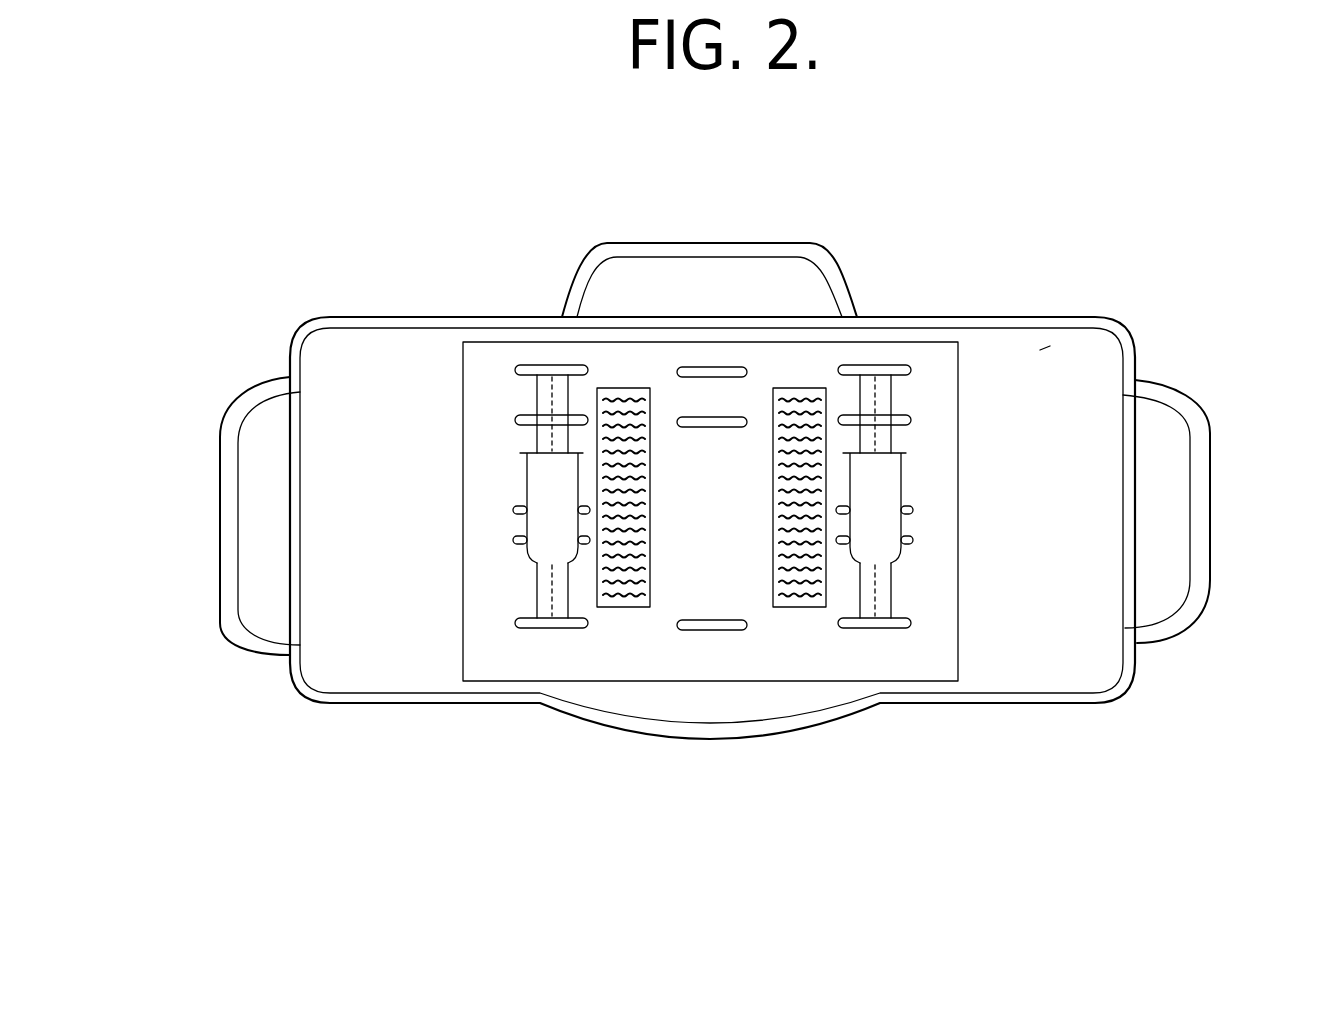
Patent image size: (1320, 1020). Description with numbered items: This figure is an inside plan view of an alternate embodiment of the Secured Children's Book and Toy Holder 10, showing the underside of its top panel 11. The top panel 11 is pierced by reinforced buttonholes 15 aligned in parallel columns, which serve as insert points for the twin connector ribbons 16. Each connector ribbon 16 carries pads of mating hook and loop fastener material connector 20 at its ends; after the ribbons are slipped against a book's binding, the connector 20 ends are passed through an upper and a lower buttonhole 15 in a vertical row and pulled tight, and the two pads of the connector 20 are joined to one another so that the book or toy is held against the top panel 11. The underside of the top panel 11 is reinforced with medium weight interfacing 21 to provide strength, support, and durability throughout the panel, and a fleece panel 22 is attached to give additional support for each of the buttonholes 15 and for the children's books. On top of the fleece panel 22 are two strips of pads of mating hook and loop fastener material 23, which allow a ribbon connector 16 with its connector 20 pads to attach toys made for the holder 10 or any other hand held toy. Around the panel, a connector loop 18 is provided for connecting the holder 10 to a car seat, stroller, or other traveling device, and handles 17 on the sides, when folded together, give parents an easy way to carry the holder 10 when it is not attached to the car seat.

The Secured Children's Book and Toy Holder 10 is at (418, 358).
The top panel 11 is at (730, 521).
The reinforced buttonholes 15 is at (517, 620).
The connector ribbons 16 is at (545, 405).
The handles 17 is at (228, 560).
The connector loop 18 is at (790, 243).
The pads of mating hook and loop fastener material connector 20 is at (540, 498).
The medium weight interfacing 21 is at (1035, 355).
The fleece panel 22 is at (845, 658).
The strips of pads of mating hook and loop fastener material 23 is at (622, 605).